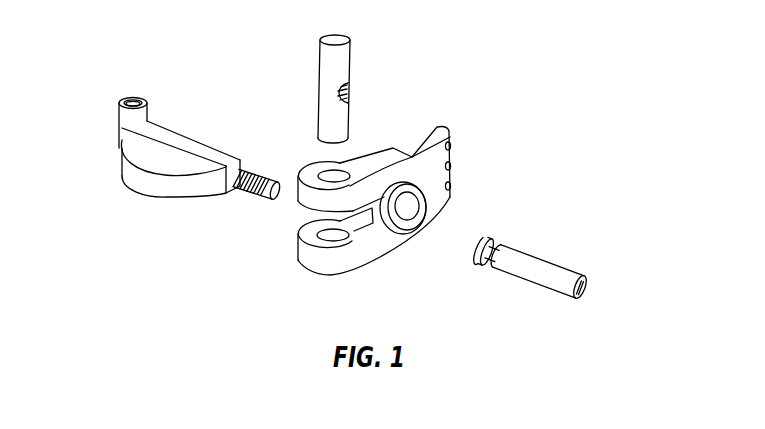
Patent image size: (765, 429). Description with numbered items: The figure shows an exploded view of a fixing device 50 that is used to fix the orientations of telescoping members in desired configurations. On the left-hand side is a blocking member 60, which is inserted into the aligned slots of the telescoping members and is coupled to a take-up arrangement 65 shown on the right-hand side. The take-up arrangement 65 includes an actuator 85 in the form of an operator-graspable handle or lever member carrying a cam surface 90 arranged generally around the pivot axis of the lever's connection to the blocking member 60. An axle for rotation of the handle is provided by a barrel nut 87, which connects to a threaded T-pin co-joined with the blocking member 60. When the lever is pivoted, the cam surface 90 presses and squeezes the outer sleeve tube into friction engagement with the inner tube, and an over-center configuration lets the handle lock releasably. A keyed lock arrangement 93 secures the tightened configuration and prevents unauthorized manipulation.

The fixing device 50 is at (165, 45).
The blocking member 60 is at (156, 181).
The take-up arrangement 65 is at (502, 139).
The actuator 85 is at (436, 197).
The barrel nut 87 is at (355, 56).
The cam surface 90 is at (305, 159).
The keyed lock arrangement 93 is at (555, 241).